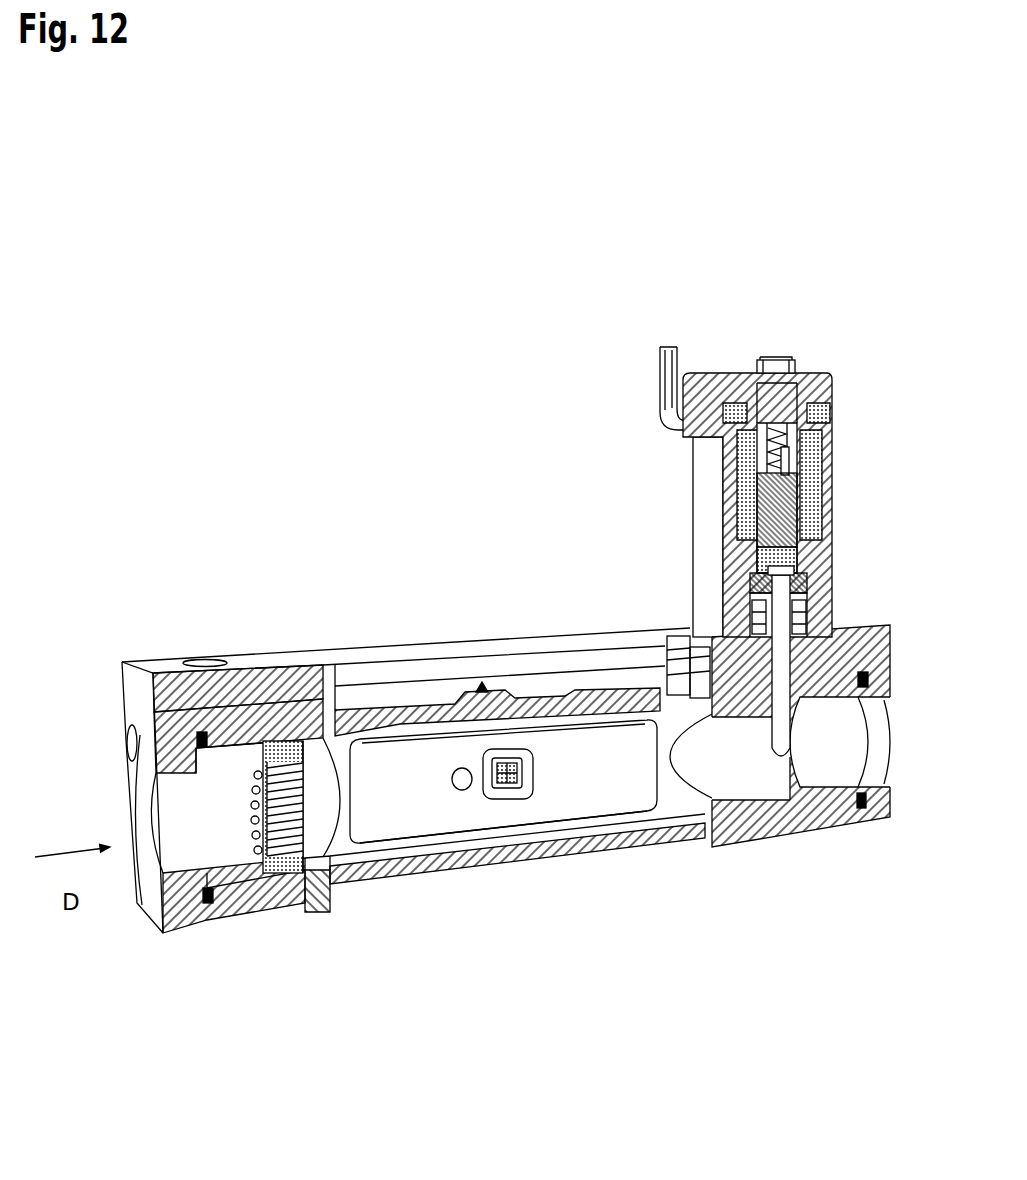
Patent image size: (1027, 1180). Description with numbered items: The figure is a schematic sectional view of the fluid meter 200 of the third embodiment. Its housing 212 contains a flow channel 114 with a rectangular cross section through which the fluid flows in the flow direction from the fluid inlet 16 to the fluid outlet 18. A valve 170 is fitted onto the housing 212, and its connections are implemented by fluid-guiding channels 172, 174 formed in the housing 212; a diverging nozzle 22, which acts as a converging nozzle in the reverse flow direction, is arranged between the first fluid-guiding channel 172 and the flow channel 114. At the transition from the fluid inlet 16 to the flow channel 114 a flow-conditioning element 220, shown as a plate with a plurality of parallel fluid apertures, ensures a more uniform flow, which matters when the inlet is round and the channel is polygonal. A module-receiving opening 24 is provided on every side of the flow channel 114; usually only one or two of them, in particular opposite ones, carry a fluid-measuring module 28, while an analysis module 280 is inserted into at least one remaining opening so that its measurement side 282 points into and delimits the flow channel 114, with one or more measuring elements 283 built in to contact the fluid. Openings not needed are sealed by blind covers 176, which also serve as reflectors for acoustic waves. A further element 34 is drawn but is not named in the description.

The fluid meter 200 is at (176, 406).
The valve 170 is at (853, 408).
The first fluid-guiding channel 172 is at (800, 672).
The fluid-guiding channel 174 is at (750, 665).
The fluid inlet 16 is at (173, 808).
The fluid outlet 18 is at (838, 742).
The diverging nozzle 22 is at (730, 778).
The module-receiving opening 24 is at (362, 682).
The fluid-measuring module 28 is at (471, 708).
The measuring element 283 is at (443, 776).
The chamber 34 is at (562, 722).
The analysis module 280 is at (598, 783).
The blind cover 176 is at (481, 858).
The flow channel 114 is at (438, 868).
The measurement side 282 is at (512, 812).
The flow-conditioning element 220 is at (305, 893).
The housing 212 is at (263, 918).